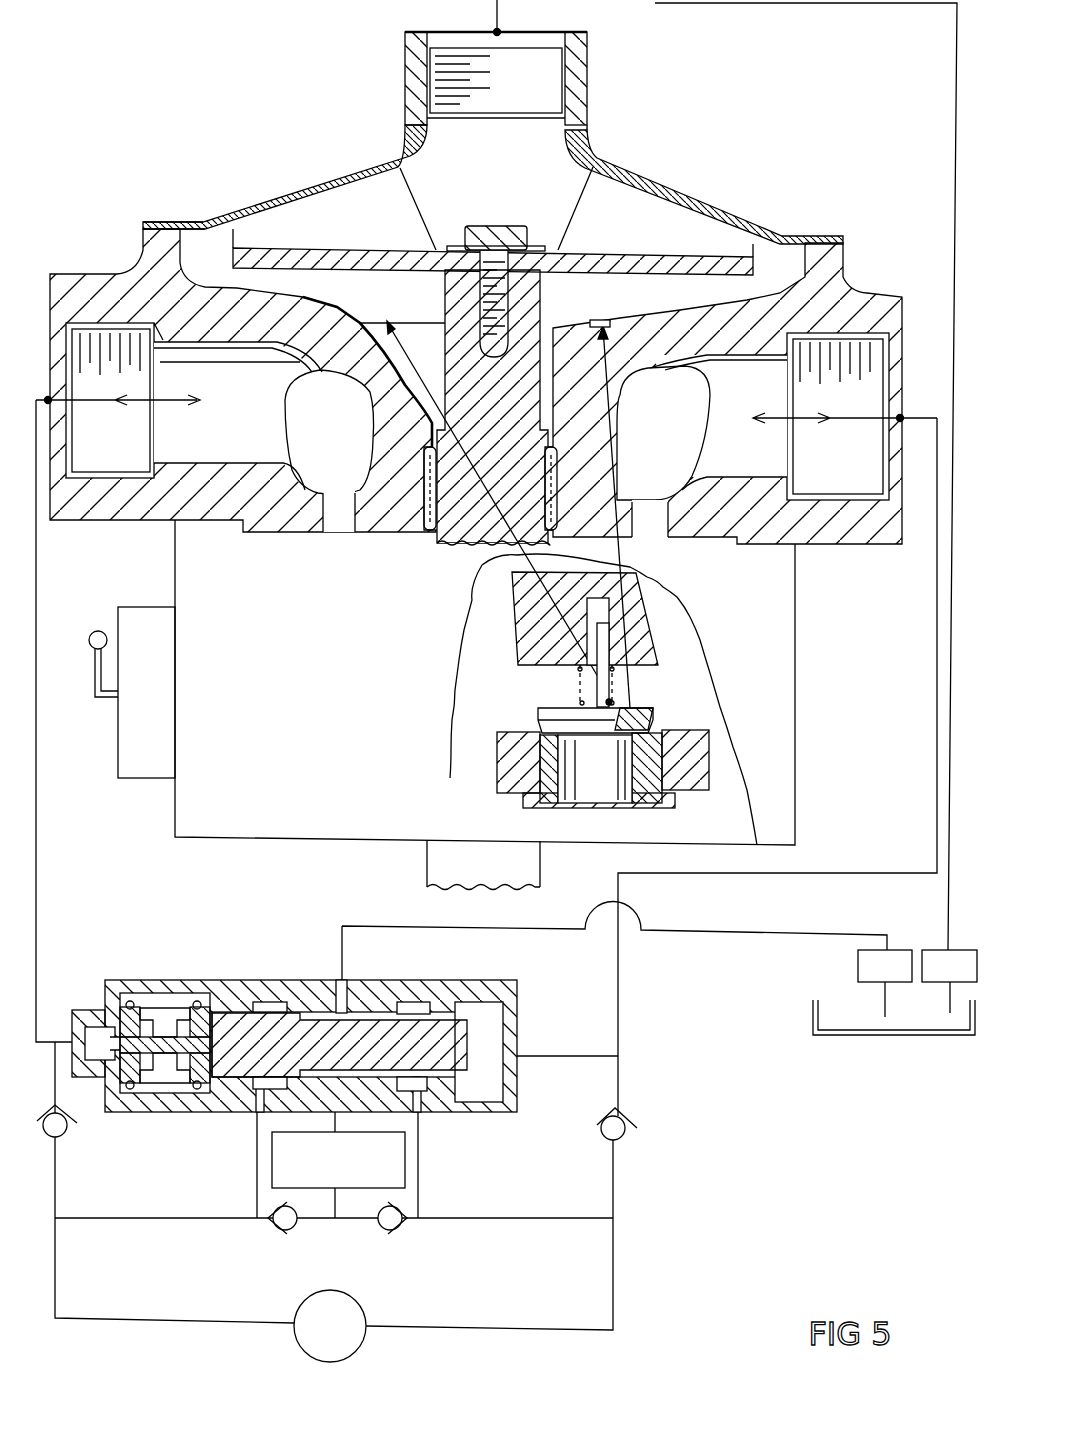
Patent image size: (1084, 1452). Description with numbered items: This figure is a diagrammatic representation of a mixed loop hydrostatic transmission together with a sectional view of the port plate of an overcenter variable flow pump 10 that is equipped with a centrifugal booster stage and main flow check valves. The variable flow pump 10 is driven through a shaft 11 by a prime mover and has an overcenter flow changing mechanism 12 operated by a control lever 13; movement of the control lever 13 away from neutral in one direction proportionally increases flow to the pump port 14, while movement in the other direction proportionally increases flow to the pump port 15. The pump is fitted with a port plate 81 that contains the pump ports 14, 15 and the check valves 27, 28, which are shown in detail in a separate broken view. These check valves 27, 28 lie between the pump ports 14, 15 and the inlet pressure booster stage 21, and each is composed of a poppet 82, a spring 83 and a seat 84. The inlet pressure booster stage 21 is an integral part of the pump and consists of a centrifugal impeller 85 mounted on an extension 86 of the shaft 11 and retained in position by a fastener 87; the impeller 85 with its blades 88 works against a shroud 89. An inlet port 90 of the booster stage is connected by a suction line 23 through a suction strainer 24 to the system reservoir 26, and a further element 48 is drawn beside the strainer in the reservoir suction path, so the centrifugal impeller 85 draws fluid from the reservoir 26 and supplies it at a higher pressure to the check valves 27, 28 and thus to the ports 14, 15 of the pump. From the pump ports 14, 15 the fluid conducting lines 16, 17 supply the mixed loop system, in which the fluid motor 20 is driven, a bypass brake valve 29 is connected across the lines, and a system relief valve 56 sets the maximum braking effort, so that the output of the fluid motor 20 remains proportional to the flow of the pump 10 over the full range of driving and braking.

The variable flow pump 10 is at (332, 679).
The shaft 11 is at (435, 862).
The flow changing mechanism 12 is at (144, 699).
The control lever 13 is at (99, 642).
The pump port 14 is at (102, 447).
The pump port 15 is at (834, 462).
The fluid conducting line 16 is at (36, 778).
The fluid conducting line 17 is at (937, 740).
The fluid motor 20 is at (324, 1341).
The inlet pressure booster stage 21 is at (698, 233).
The suction line 23 is at (956, 122).
The suction strainer 24 is at (963, 950).
The system reservoir 26 is at (880, 1035).
The check valve 27 is at (398, 318).
The check valve 28 is at (626, 320).
The bypass brake valve 29 is at (163, 977).
The valve 48 is at (907, 950).
The system relief valve 56 is at (329, 1175).
The port plate 81 is at (150, 238).
The poppet 82 is at (555, 722).
The spring 83 is at (612, 698).
The seat 84 is at (655, 805).
The centrifugal impeller 85 is at (657, 200).
The extension 86 is at (530, 375).
The fastener 87 is at (492, 240).
The blades 88 is at (363, 187).
The shroud 89 is at (290, 190).
The inlet port 90 is at (522, 92).